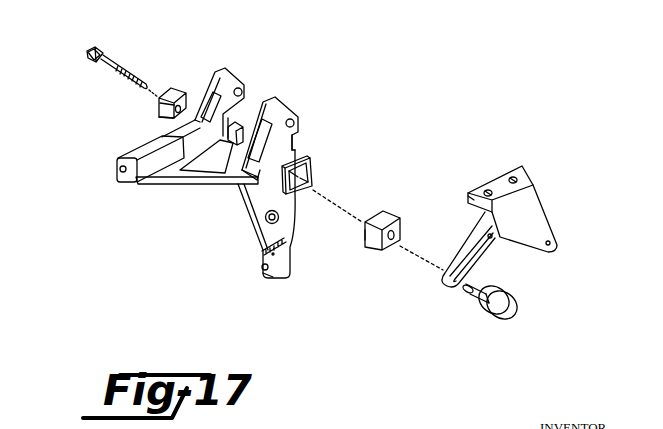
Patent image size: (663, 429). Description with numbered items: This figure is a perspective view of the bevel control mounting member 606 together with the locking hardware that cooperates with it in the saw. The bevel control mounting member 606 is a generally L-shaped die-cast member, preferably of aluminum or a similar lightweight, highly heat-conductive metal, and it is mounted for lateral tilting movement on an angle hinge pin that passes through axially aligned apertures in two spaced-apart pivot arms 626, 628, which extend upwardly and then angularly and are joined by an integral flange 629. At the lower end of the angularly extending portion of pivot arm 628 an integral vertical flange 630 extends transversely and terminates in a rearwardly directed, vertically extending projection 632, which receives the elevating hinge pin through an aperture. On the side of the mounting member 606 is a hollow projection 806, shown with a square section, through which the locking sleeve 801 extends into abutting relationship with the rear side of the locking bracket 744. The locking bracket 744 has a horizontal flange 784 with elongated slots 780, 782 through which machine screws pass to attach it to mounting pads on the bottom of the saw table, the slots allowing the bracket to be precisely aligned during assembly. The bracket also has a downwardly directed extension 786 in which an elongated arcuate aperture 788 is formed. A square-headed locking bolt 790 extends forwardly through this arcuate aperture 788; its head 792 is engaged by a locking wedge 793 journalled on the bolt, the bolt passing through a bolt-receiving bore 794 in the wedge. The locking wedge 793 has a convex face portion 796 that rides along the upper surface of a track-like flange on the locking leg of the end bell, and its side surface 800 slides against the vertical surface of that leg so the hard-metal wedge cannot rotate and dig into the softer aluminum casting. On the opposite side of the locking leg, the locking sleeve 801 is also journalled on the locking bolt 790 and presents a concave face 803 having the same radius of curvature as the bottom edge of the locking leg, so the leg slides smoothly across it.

The bevel control mounting member 606 is at (226, 204).
The pivot arm 626 is at (292, 114).
The pivot arm 628 is at (236, 85).
The integral flange 629 is at (262, 104).
The vertical flange 630 is at (184, 137).
The projection 632 is at (118, 165).
The locking bracket 744 is at (542, 216).
The elongated slot 780 is at (480, 186).
The elongated slot 782 is at (516, 176).
The horizontal flange 784 is at (493, 185).
The downwardly directed extension 786 is at (483, 270).
The elongated arcuate aperture 788 is at (497, 238).
The locking bolt 790 is at (120, 65).
The head 792 is at (87, 56).
The locking wedge 793 is at (172, 88).
The bolt-receiving bore 794 is at (160, 103).
The convex face portion 796 is at (183, 113).
The side surface 800 is at (186, 86).
The locking sleeve 801 is at (378, 252).
The concave face 803 is at (362, 234).
The hollow projection 806 is at (313, 180).